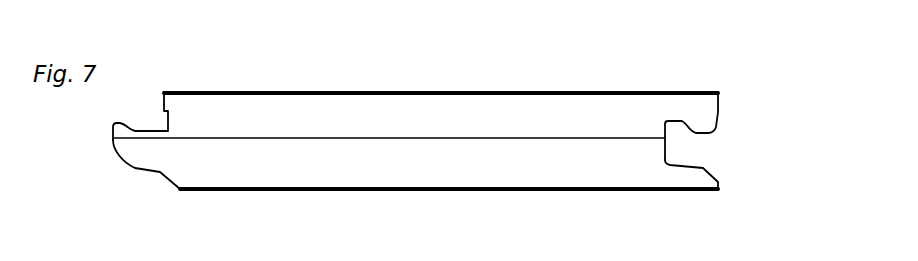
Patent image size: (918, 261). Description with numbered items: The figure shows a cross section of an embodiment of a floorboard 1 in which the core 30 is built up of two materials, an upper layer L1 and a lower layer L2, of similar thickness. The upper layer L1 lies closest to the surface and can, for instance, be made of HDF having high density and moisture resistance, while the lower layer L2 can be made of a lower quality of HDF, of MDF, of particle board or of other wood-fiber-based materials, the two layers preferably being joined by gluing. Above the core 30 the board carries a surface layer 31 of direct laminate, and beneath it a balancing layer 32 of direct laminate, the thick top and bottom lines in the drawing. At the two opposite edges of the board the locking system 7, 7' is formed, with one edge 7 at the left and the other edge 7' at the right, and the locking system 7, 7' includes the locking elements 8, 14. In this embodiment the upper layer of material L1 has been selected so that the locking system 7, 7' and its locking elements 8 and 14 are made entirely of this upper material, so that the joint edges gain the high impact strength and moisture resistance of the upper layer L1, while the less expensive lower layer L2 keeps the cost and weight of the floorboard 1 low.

The floorboard 1 is at (273, 54).
The locking system 7 is at (99, 151).
The locking system 7' is at (743, 166).
The locking element 8 is at (121, 130).
The locking element 14 is at (677, 118).
The core 30 is at (745, 121).
The surface layer 31 is at (568, 91).
The balancing layer 32 is at (411, 191).
The upper layer L1 is at (197, 103).
The lower layer L2 is at (573, 162).